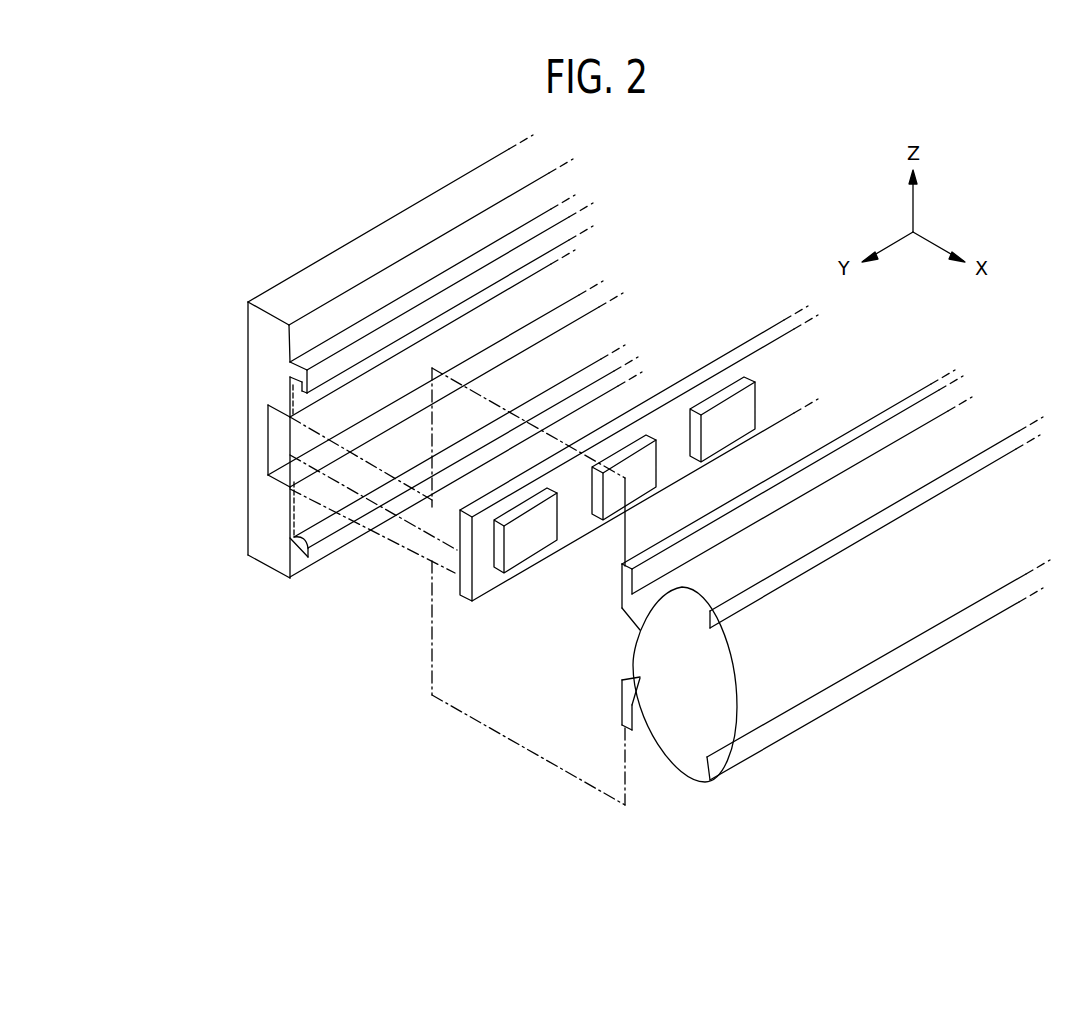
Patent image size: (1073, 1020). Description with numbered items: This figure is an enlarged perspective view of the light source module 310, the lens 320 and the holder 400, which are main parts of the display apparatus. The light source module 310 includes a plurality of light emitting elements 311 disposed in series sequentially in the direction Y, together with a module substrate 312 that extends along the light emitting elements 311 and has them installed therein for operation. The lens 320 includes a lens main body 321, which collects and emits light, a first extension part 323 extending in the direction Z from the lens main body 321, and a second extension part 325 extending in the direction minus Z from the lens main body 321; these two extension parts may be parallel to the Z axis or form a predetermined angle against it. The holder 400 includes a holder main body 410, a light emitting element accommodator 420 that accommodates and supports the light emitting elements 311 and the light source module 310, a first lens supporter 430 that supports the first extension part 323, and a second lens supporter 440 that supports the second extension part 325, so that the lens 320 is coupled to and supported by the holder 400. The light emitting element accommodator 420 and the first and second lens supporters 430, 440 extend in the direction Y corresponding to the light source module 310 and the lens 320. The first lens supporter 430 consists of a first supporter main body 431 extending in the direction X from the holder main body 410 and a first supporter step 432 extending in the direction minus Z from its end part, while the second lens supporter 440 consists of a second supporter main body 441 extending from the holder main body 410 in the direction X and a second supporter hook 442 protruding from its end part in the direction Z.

The holder 400 is at (278, 218).
The holder main body 410 is at (250, 318).
The light emitting element accommodator 420 is at (282, 437).
The first lens supporter 430 is at (160, 357).
The first supporter main body 431 is at (298, 375).
The first supporter step 432 is at (303, 396).
The second lens supporter 440 is at (160, 515).
The second supporter main body 441 is at (297, 540).
The second supporter hook 442 is at (290, 538).
The light source module 310 is at (573, 660).
The light emitting elements 311 is at (608, 500).
The module substrate 312 is at (482, 590).
The lens 320 is at (905, 765).
The lens main body 321 is at (722, 697).
The first extension part 323 is at (740, 520).
The second extension part 325 is at (633, 708).